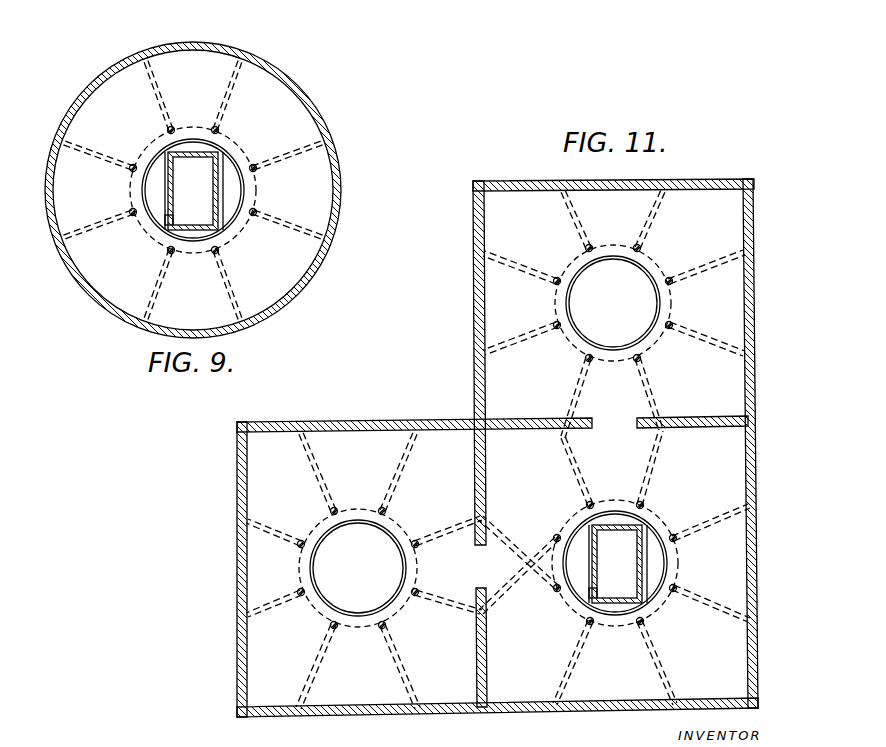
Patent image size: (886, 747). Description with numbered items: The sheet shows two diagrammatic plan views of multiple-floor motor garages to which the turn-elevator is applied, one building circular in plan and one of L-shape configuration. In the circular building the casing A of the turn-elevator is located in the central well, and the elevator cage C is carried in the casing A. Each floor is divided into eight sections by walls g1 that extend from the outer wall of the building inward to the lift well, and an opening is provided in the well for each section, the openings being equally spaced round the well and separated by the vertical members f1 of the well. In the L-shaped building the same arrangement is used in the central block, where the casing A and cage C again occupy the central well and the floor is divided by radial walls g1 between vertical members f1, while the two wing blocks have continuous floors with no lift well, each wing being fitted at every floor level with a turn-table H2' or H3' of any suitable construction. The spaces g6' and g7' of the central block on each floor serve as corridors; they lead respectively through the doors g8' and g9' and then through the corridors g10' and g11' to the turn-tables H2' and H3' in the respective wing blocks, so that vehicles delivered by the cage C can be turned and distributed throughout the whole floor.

In FIG. 9, the walls g1 is at (97, 143).
In FIG. 11, the walls g1 is at (697, 341).
In FIG. 9, the vertical members f1 is at (213, 126).
In FIG. 11, the vertical members f1 is at (555, 324).
In FIG. 9, the casing A is at (238, 153).
In FIG. 11, the casing A is at (667, 563).
In FIG. 9, the elevator cage C is at (194, 191).
In FIG. 11, the elevator cage C is at (618, 564).
In FIG. 11, the turn-table H3' is at (613, 303).
In FIG. 11, the turn-table H2' is at (358, 568).
In FIG. 11, the space g6' is at (519, 565).
In FIG. 11, the space g7' is at (612, 467).
In FIG. 11, the door g8' is at (587, 394).
In FIG. 11, the door g9' is at (472, 516).
In FIG. 11, the corridor g10' is at (448, 587).
In FIG. 11, the corridor g11' is at (596, 397).